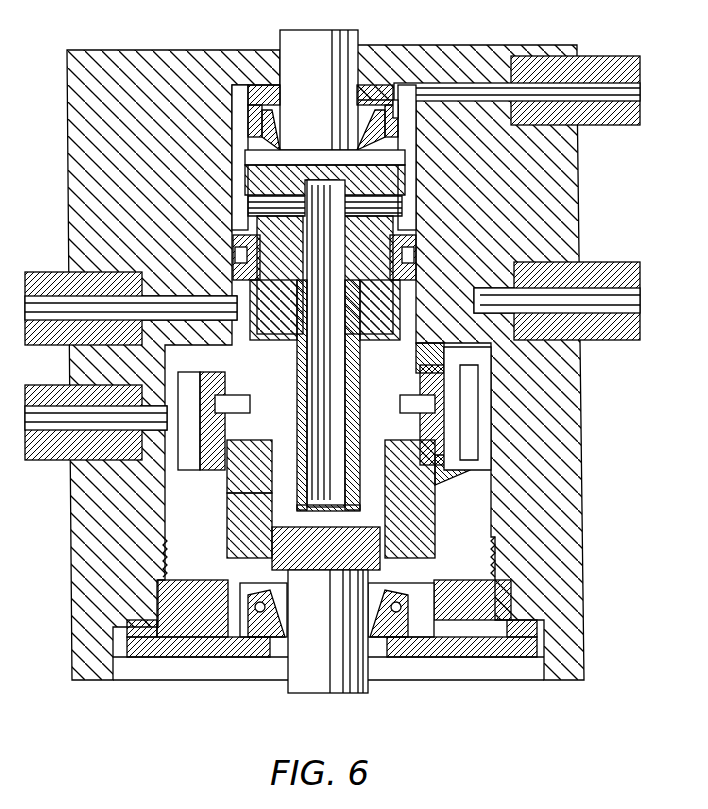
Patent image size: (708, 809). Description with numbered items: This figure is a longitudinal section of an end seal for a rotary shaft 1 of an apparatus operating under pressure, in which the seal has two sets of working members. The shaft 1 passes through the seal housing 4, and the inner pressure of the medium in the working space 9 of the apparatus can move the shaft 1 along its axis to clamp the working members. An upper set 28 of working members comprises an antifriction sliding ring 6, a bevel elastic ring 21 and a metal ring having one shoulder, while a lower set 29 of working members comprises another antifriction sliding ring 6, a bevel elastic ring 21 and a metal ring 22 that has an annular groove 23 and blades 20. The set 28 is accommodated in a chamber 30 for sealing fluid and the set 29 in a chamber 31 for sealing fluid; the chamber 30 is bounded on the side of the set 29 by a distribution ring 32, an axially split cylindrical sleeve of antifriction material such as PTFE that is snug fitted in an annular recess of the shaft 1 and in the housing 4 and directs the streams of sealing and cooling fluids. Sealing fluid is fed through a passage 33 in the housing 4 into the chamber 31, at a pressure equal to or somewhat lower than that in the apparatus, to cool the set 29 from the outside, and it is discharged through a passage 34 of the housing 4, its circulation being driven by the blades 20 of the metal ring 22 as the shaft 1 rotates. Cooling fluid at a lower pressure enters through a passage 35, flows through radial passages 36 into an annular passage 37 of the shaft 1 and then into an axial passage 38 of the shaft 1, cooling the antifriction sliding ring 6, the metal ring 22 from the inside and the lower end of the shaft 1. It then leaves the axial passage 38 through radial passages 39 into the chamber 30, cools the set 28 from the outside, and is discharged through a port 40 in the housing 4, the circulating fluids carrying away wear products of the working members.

The rotary shaft 1 is at (286, 668).
The housing 4 is at (72, 535).
The antifriction sliding ring 6 is at (356, 100).
The working space 9 is at (492, 660).
The blades 20 is at (190, 470).
The bevel elastic ring 21 is at (357, 128).
The metal ring 22 is at (360, 400).
The annular groove 23 is at (432, 413).
The set of working members 28 is at (402, 119).
The set of working members 29 is at (484, 472).
The chamber 30 is at (243, 85).
The chamber 31 is at (492, 512).
The distribution ring 32 is at (416, 238).
The passage 33 is at (486, 290).
The passage 34 is at (152, 408).
The passage 35 is at (190, 300).
The radial passages 36 is at (290, 326).
The annular passage 37 is at (270, 500).
The axial passage 38 is at (376, 490).
The radial passages 39 is at (372, 218).
The port 40 is at (456, 88).